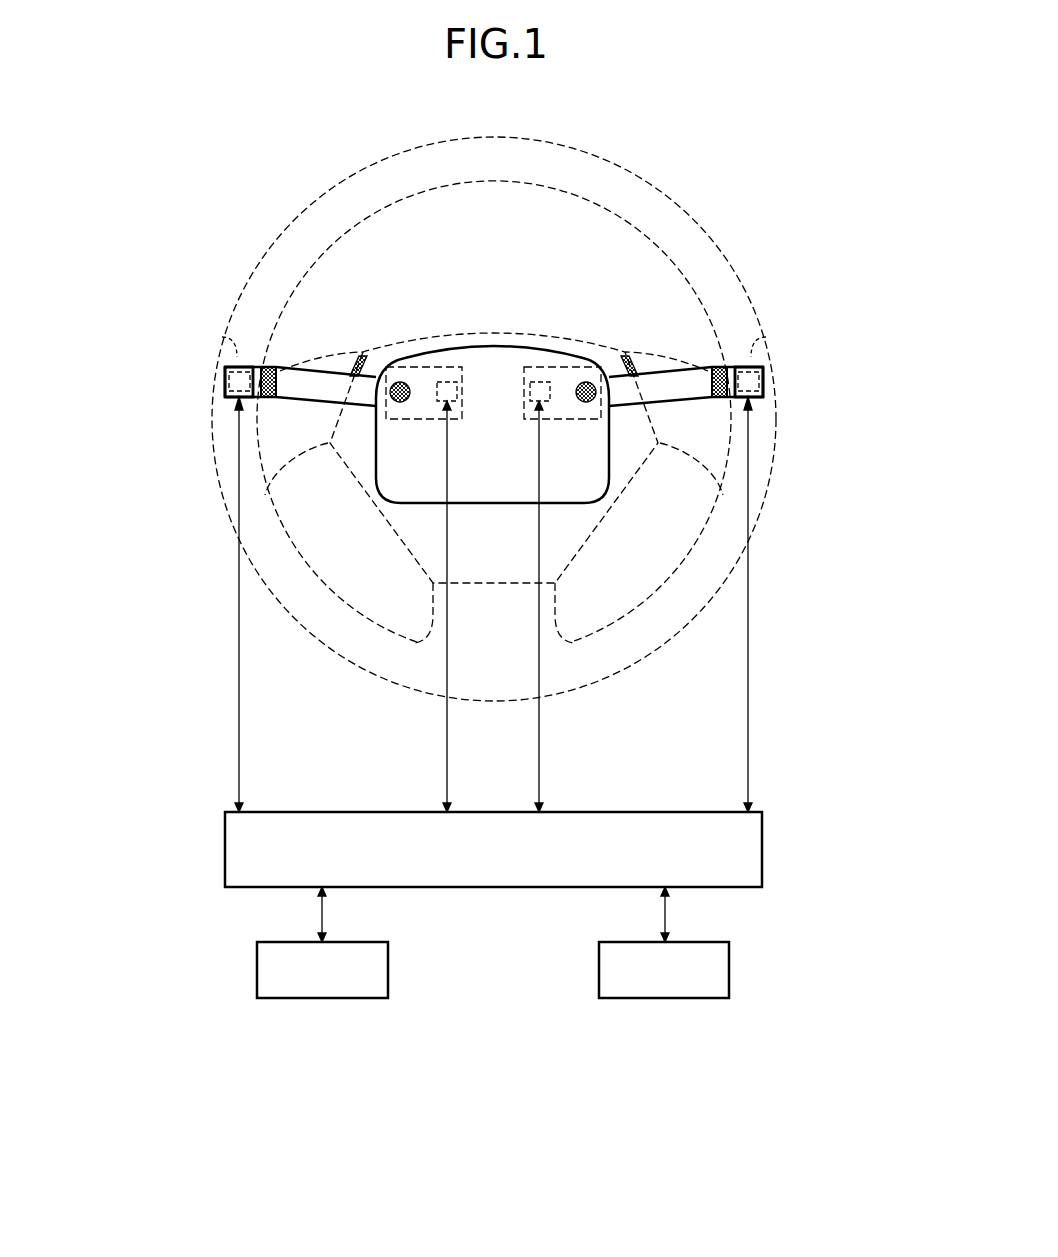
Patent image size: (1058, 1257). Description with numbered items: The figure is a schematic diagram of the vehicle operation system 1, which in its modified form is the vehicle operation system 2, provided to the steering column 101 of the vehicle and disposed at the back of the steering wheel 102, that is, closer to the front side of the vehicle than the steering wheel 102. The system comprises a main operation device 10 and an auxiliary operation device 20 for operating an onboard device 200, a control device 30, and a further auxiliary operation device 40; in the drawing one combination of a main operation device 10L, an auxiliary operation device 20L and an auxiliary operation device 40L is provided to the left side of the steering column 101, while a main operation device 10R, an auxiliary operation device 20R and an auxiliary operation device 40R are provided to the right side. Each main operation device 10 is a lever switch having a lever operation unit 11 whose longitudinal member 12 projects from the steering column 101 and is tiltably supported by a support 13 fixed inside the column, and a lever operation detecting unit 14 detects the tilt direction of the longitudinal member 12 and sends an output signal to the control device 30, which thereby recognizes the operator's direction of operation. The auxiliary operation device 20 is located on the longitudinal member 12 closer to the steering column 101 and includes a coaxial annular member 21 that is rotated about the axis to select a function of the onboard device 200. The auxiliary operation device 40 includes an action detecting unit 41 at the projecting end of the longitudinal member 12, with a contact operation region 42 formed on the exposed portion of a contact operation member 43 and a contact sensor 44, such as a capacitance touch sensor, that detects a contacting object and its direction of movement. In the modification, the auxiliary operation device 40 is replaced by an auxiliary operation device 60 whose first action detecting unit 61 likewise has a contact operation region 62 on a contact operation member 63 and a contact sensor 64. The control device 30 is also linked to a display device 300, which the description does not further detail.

The vehicle operation system 1 is at (498, 444).
The vehicle operation system 2 is at (498, 444).
The steering wheel 102 is at (494, 137).
The steering column 101 is at (494, 345).
The main operation device 10 is at (494, 299).
The main operation device 10L is at (257, 360).
The main operation device 10R is at (728, 360).
The lever operation unit 11 is at (494, 303).
The longitudinal member 12 is at (361, 356).
The support 13 is at (392, 367).
The lever operation detecting unit 14 is at (447, 381).
The auxiliary operation device 20 is at (494, 334).
The auxiliary operation device 20L is at (274, 362).
The auxiliary operation device 20R is at (714, 362).
The annular member 21 is at (268, 398).
The control device 30 is at (628, 812).
The auxiliary operation device 40 is at (498, 589).
The auxiliary operation device 40L is at (229, 402).
The auxiliary operation device 40R is at (760, 402).
The action detecting unit 41 is at (492, 310).
The contact operation region 42 is at (493, 382).
The contact operation member 43 is at (493, 331).
The contact sensor 44 is at (493, 314).
The auxiliary operation device 60 is at (498, 589).
The first action detecting unit 61 is at (492, 310).
The contact operation region 62 is at (225, 380).
The contact operation member 63 is at (855, 323).
The contact sensor 64 is at (493, 314).
The onboard device 200 is at (292, 998).
The display device 300 is at (637, 998).